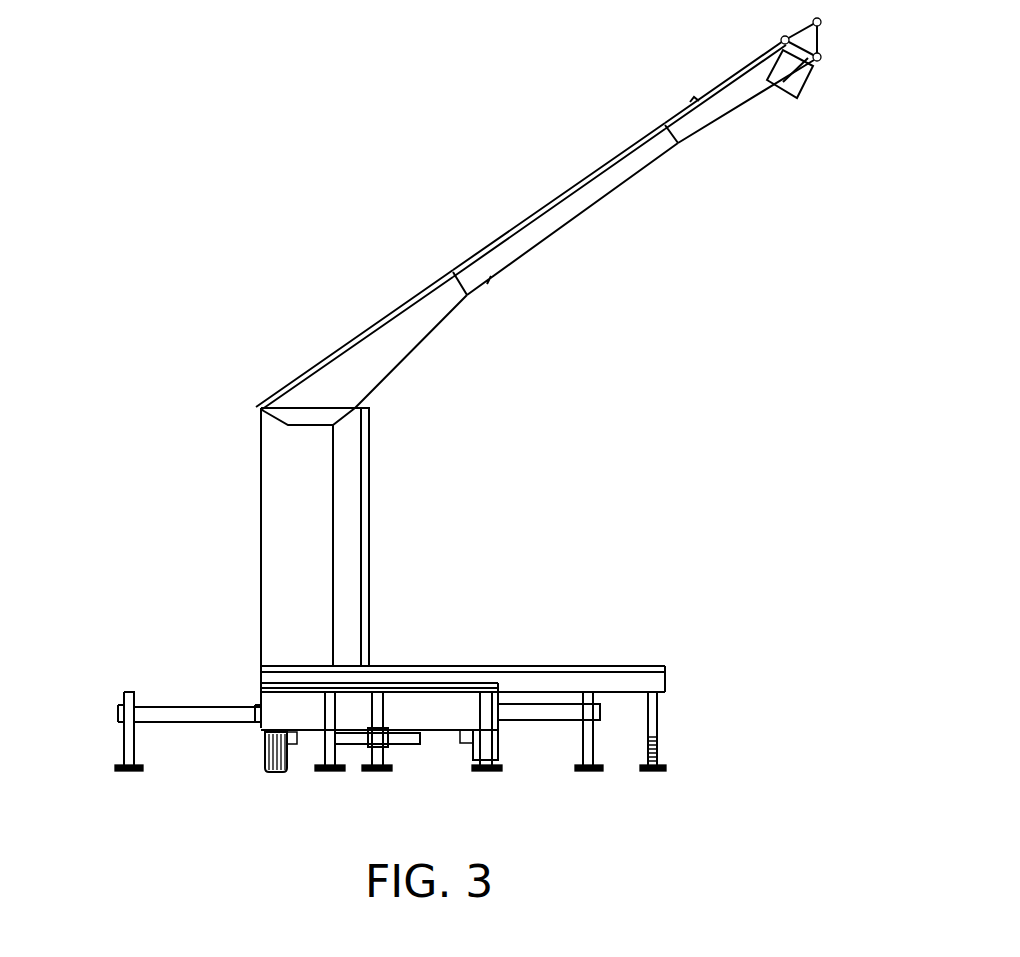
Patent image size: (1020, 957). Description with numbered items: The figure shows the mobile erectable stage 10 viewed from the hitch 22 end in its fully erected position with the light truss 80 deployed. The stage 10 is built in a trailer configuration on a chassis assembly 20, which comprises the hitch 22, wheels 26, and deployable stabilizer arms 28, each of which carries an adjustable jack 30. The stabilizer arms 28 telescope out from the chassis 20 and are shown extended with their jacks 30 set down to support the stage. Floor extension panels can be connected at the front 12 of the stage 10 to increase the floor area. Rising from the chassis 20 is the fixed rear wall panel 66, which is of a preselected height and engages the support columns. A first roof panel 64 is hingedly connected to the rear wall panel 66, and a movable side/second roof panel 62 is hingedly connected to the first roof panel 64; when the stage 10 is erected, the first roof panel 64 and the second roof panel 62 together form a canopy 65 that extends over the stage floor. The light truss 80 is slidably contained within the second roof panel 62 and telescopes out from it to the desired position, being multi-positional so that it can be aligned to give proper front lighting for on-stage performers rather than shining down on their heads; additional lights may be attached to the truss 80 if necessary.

The mobile erectable stage 10 is at (367, 205).
The front 12 is at (676, 637).
The chassis assembly 20 is at (304, 795).
The hitch 22 is at (384, 740).
The wheels 26 is at (266, 774).
The stabilizer arms 28 is at (166, 719).
The adjustable jack 30 is at (123, 740).
The movable side/second roof panel 62 is at (622, 147).
The first roof panel 64 is at (385, 312).
The canopy 65 is at (489, 182).
The rear wall panel 66 is at (261, 512).
The light truss 80 is at (821, 40).